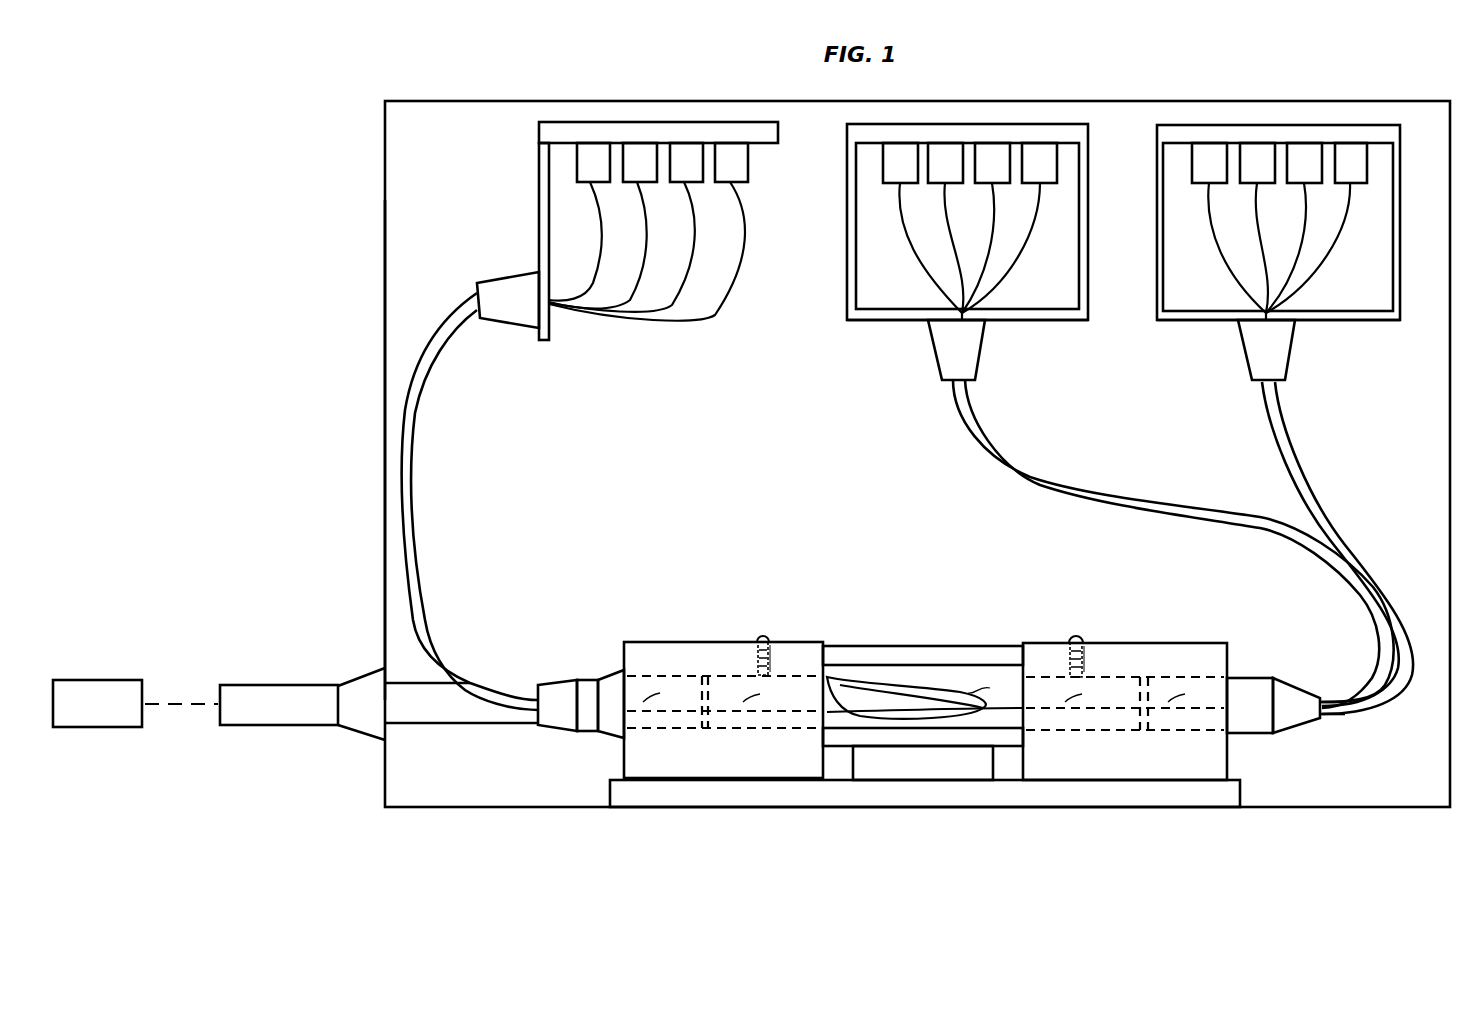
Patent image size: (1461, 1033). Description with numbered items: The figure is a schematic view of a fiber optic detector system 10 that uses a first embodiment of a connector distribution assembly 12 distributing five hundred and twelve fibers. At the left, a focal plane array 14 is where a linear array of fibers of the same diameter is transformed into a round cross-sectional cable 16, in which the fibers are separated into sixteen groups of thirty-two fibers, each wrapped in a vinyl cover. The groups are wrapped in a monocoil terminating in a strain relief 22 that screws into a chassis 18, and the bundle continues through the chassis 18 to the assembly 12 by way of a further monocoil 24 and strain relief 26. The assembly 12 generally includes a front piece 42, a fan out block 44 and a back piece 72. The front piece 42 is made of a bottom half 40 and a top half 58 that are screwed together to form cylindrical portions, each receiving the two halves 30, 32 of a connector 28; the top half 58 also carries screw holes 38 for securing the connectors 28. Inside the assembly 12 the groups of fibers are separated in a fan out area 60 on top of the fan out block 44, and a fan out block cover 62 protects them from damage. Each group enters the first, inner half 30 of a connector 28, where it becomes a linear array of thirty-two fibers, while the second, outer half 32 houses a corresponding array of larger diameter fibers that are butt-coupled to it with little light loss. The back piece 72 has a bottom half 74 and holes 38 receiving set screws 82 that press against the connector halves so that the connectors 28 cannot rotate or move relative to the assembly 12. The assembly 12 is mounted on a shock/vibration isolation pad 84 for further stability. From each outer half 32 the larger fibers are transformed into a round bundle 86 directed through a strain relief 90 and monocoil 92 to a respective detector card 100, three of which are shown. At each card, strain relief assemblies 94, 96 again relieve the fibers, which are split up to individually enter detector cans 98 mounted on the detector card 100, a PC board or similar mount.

The fiber optic detector system 10 is at (315, 125).
The connector distribution assembly 12 is at (873, 617).
The focal plane array 14 is at (88, 680).
The cable 16 is at (285, 710).
The chassis 18 is at (384, 461).
The strain relief 22 is at (360, 722).
The monocoil 24 is at (440, 723).
The strain relief 26 is at (589, 680).
The connector 28 is at (723, 672).
The first inner half of connector 30 is at (1100, 688).
The second outer half of connector 32 is at (1156, 688).
The screw holes 38 is at (775, 660).
The bottom half of front piece 40 is at (820, 762).
The front piece 42 is at (766, 810).
The fan out block 44 is at (893, 765).
The top half of front piece 58 is at (658, 652).
The fan out area 60 is at (993, 766).
The fan out block cover 62 is at (930, 646).
The back piece 72 is at (1205, 662).
The bottom half of back piece 74 is at (1200, 762).
The set screws 82 is at (767, 638).
The shock/vibration isolation pad 84 is at (980, 790).
The round bundle 86 is at (1346, 714).
The strain relief 90 is at (1280, 722).
The monocoil 92 is at (420, 545).
The strain relief assembly 94 is at (539, 200).
The strain relief assembly 96 is at (526, 272).
The detector can 98 is at (672, 188).
The detector card 100 is at (540, 129).